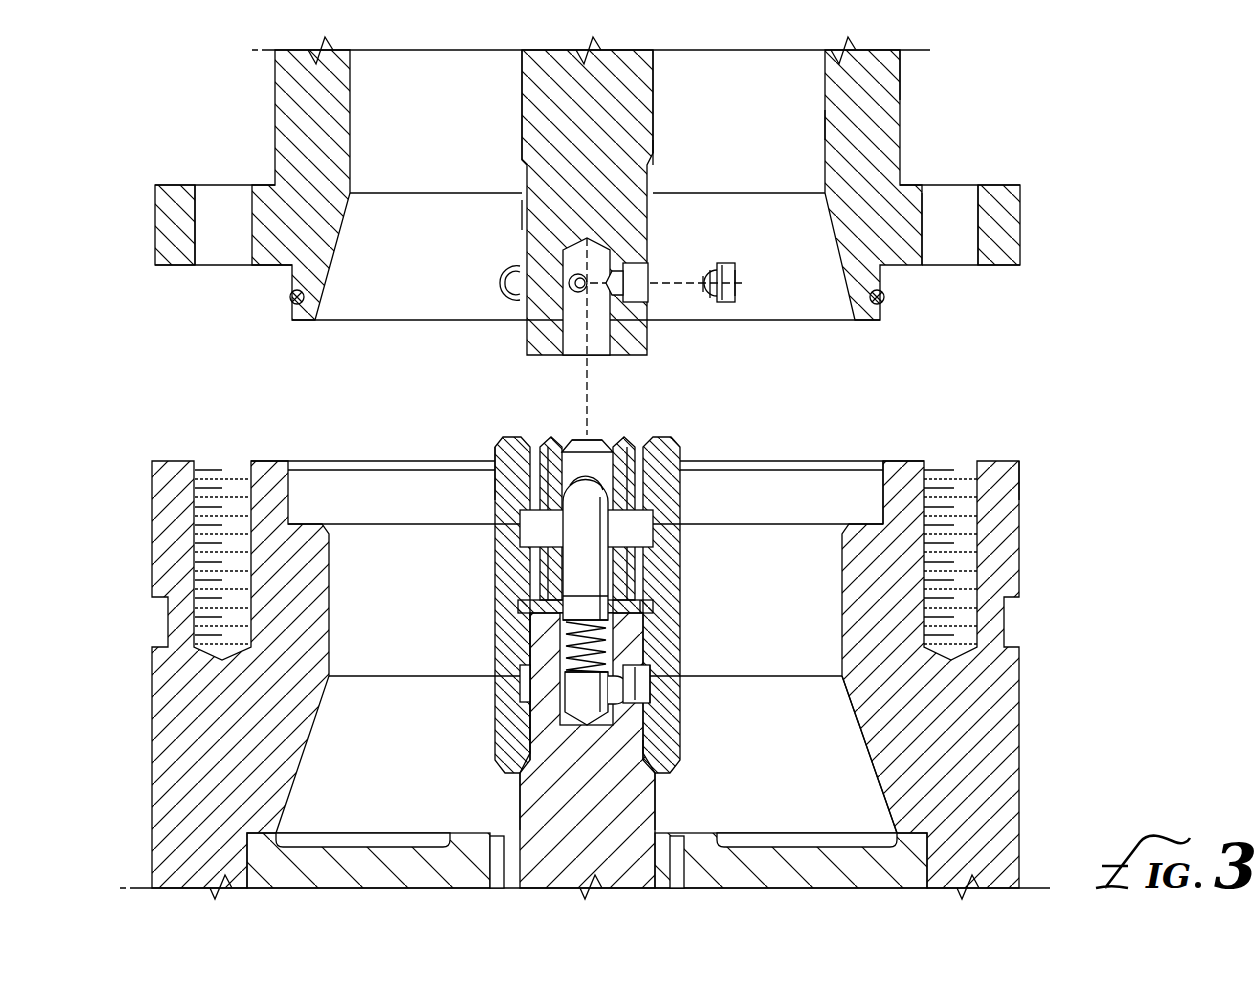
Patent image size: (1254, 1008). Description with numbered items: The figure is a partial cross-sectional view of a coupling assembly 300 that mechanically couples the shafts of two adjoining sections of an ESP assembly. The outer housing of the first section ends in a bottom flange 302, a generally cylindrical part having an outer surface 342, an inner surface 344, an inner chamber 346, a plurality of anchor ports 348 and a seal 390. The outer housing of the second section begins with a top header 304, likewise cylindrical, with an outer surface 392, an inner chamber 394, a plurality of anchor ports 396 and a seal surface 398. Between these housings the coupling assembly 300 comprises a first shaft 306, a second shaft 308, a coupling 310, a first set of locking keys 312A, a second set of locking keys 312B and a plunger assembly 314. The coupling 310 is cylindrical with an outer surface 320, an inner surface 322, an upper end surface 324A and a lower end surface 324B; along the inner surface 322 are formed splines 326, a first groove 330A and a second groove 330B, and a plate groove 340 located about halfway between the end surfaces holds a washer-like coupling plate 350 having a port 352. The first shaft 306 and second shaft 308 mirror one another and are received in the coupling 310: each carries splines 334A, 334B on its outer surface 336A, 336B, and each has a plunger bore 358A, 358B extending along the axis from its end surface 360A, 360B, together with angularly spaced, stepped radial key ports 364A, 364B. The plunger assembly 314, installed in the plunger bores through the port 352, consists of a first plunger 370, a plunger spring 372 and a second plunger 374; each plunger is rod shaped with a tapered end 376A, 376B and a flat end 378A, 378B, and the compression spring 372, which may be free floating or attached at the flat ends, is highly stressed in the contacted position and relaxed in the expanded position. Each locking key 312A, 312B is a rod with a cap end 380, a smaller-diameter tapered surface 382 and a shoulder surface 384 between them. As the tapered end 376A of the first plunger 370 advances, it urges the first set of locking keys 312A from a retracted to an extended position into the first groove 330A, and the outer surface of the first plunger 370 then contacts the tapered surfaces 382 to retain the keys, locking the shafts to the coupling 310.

The coupling assembly 300 is at (188, 356).
The bottom flange 302 is at (870, 160).
The top header 304 is at (1001, 562).
The first shaft 306 is at (554, 824).
The second shaft 308 is at (575, 108).
The coupling 310 is at (667, 522).
The first set of locking keys 312A is at (650, 686).
The second set of locking keys 312B is at (743, 283).
The plunger assembly 314 is at (553, 578).
The outer surface 320 is at (679, 488).
The inner surface 322 is at (613, 478).
The upper end surface 324A is at (500, 443).
The lower end surface 324B is at (665, 785).
The splines 326 is at (613, 457).
The first groove 330A is at (530, 700).
The second groove 330B is at (520, 527).
The splines 334A is at (526, 783).
The splines 334B is at (523, 213).
The outer surface 336A is at (663, 828).
The outer surface 336B is at (657, 155).
The plate groove 340 is at (527, 605).
The outer surface 342 is at (954, 75).
The inner surface 344 is at (808, 125).
The inner chamber 346 is at (788, 90).
The anchor ports 348 is at (960, 258).
The coupling plate 350 is at (650, 608).
The port 352 is at (592, 594).
The plunger bore 358A is at (529, 686).
The plunger bore 358B is at (548, 330).
The end surface 360A is at (632, 600).
The end surface 360B is at (633, 357).
The key ports 364A is at (630, 712).
The key ports 364B is at (628, 257).
The first plunger 370 is at (579, 702).
The plunger spring 372 is at (606, 650).
The second plunger 374 is at (579, 554).
The tapered end 376A is at (650, 745).
The tapered end 376B is at (577, 477).
The flat end 378A is at (608, 668).
The flat end 378B is at (579, 627).
The cap end 380 is at (725, 273).
The tapered surface 382 is at (705, 298).
The shoulder surface 384 is at (710, 297).
The seal 390 is at (892, 297).
The outer surface 392 is at (1019, 497).
The inner chamber 394 is at (842, 765).
The threaded bore 396 is at (963, 486).
The seal surface 398 is at (883, 494).